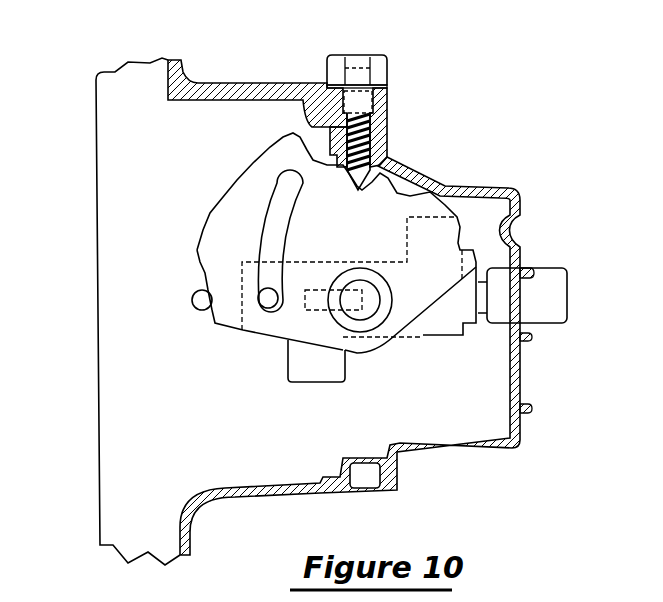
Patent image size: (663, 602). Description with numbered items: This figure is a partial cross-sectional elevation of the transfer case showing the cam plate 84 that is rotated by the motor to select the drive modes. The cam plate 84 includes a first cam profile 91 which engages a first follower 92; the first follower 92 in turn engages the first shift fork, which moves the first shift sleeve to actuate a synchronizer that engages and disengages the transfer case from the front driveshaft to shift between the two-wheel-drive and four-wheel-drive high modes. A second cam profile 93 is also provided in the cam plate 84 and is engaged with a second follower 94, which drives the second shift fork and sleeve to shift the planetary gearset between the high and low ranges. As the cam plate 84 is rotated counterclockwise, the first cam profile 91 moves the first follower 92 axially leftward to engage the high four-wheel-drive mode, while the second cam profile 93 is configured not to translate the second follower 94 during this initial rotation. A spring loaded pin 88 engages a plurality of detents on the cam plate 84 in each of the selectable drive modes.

The cam plate 84 is at (223, 207).
The spring loaded pin 88 is at (388, 57).
The first cam profile 91 is at (205, 273).
The first follower 92 is at (203, 311).
The second cam profile 93 is at (296, 200).
The second follower 94 is at (270, 288).